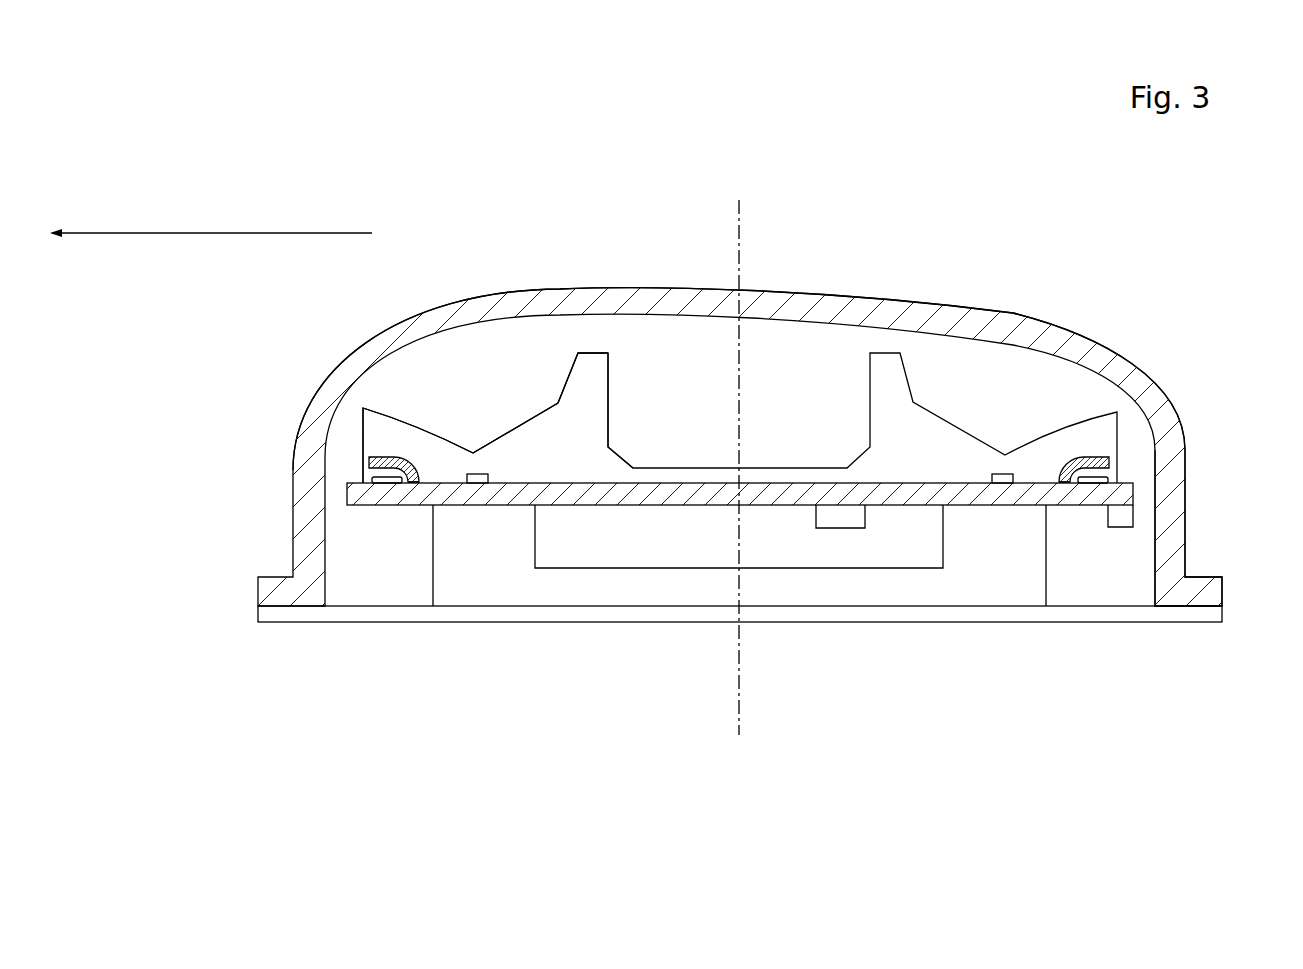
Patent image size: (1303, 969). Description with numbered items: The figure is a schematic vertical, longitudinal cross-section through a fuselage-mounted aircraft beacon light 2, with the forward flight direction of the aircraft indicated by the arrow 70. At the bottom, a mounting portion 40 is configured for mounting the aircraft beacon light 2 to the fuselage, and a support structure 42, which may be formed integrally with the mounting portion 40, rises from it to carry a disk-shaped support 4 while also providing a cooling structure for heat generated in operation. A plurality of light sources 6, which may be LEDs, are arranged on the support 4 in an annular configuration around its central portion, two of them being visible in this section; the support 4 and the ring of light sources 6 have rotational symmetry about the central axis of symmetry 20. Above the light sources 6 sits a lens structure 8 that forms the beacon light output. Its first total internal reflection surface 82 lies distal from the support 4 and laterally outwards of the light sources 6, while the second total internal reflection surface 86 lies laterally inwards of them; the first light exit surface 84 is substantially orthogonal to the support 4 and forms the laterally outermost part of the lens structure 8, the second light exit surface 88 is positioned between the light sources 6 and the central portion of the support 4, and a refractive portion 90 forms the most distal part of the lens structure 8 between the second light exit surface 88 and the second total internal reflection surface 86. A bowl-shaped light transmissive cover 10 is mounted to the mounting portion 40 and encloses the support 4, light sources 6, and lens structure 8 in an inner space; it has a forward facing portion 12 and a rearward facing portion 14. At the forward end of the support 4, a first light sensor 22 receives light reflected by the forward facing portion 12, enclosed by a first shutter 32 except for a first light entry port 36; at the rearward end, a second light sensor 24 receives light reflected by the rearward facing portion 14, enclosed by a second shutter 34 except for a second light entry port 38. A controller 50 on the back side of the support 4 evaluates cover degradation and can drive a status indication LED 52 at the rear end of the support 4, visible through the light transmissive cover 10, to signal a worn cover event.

The aircraft beacon light 2 is at (620, 172).
The support 4 is at (613, 497).
The light sources 6 is at (477, 483).
The lens structure 8 is at (634, 404).
The light transmissive cover 10 is at (781, 296).
The forward facing portion 12 is at (272, 481).
The rearward facing portion 14 is at (1208, 514).
The central axis of symmetry 20 is at (739, 716).
The first light sensor 22 is at (383, 505).
The second light sensor 24 is at (1090, 505).
The first shutter 32 is at (411, 486).
The second shutter 34 is at (1063, 487).
The first light entry port 36 is at (361, 465).
The second light entry port 38 is at (1117, 470).
The mounting portion 40 is at (910, 618).
The support structure 42 is at (857, 588).
The controller 50 is at (827, 517).
The status indication LED 52 is at (1122, 517).
The arrow 70 is at (242, 233).
The first total internal reflection surface 82 is at (432, 428).
The first light exit surface 84 is at (363, 435).
The second total internal reflection surface 86 is at (517, 426).
The second light exit surface 88 is at (610, 433).
The refractive portion 90 is at (595, 352).